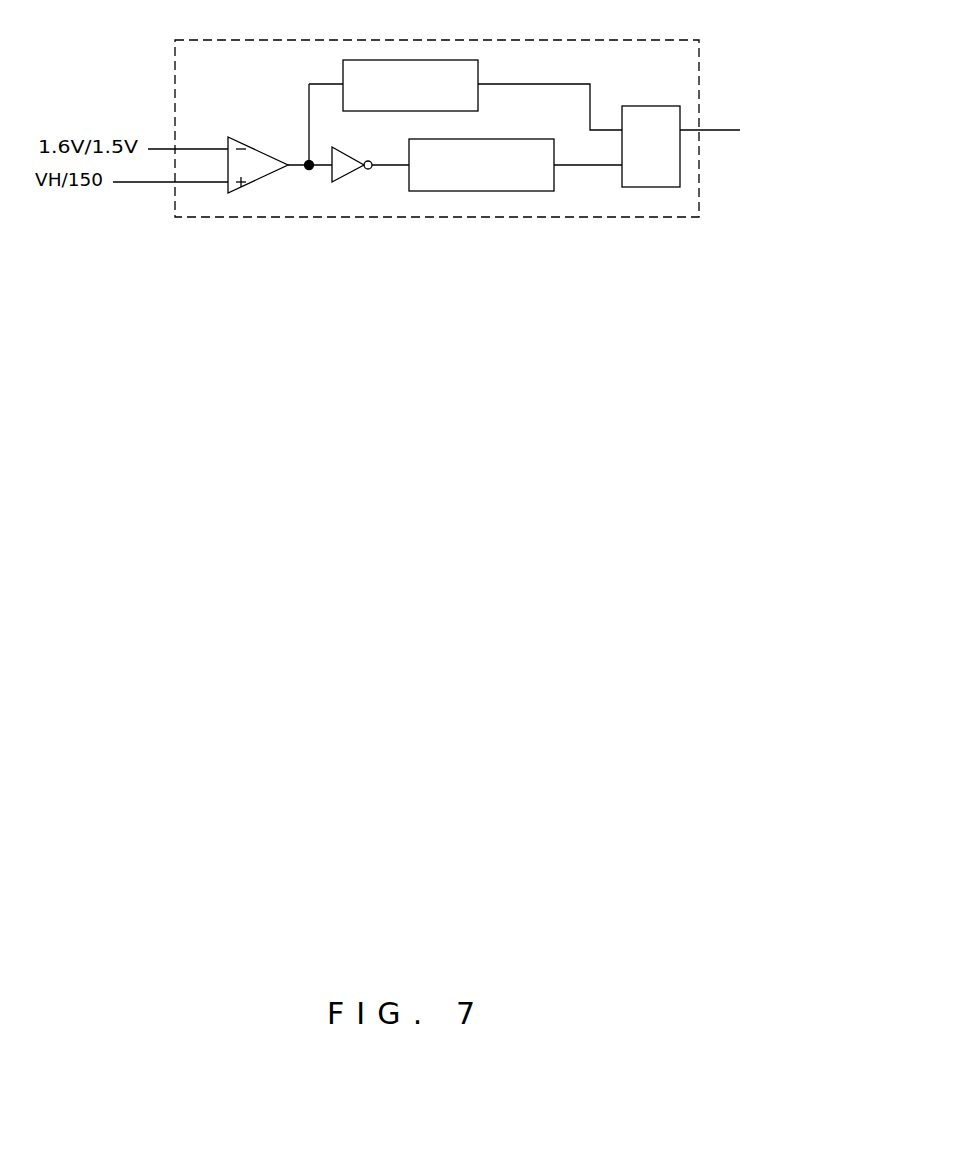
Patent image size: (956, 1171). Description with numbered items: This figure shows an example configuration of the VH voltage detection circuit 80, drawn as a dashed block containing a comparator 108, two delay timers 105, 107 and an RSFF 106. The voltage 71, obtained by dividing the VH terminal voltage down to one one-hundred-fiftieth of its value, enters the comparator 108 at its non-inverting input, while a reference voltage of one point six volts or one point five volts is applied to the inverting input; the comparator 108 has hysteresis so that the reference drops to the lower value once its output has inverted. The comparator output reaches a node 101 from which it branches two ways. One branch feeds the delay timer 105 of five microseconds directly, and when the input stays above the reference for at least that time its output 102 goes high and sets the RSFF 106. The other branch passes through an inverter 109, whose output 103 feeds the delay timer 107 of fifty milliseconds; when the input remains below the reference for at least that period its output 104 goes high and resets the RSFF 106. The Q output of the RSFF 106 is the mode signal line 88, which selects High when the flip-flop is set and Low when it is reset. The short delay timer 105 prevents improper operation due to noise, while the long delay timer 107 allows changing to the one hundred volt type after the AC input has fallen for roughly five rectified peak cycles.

The VH voltage detection circuit 80 is at (178, 39).
The voltage (VH/150) 71 is at (170, 169).
The comparator output node 101 is at (318, 142).
The output of delay timer 5 μs 102 is at (550, 107).
The inverter output line 103 is at (389, 177).
The output of delay timer 50 ms 104 is at (588, 177).
The delay timer 5 μs 105 is at (482, 74).
The RSFF (RS flip-flop) 106 is at (652, 187).
The delay timer 50 ms 107 is at (478, 191).
The comparator 108 is at (255, 193).
The inverter 109 is at (349, 175).
The VHmode output line 88 is at (746, 139).